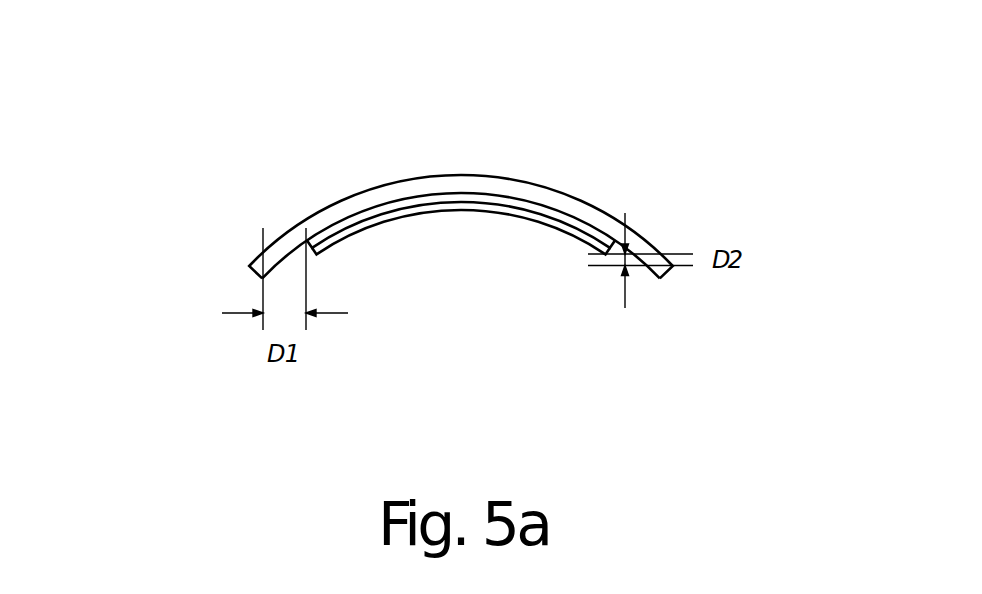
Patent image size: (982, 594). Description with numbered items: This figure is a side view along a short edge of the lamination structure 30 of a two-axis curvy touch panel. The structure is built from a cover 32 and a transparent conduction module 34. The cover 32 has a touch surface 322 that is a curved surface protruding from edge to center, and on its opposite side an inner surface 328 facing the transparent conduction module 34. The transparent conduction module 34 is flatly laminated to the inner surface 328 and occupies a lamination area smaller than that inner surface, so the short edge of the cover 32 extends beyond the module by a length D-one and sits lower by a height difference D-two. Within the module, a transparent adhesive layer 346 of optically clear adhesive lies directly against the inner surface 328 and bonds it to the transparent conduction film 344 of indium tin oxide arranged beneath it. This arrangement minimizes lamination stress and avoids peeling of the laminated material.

The lamination structure 30 is at (183, 127).
The cover 32 is at (312, 217).
The touch surface 322 is at (362, 192).
The inner surface 328 is at (395, 203).
The transparent conduction module 34 is at (748, 128).
The transparent adhesive layer 346 is at (568, 222).
The transparent conduction film 344 is at (597, 240).